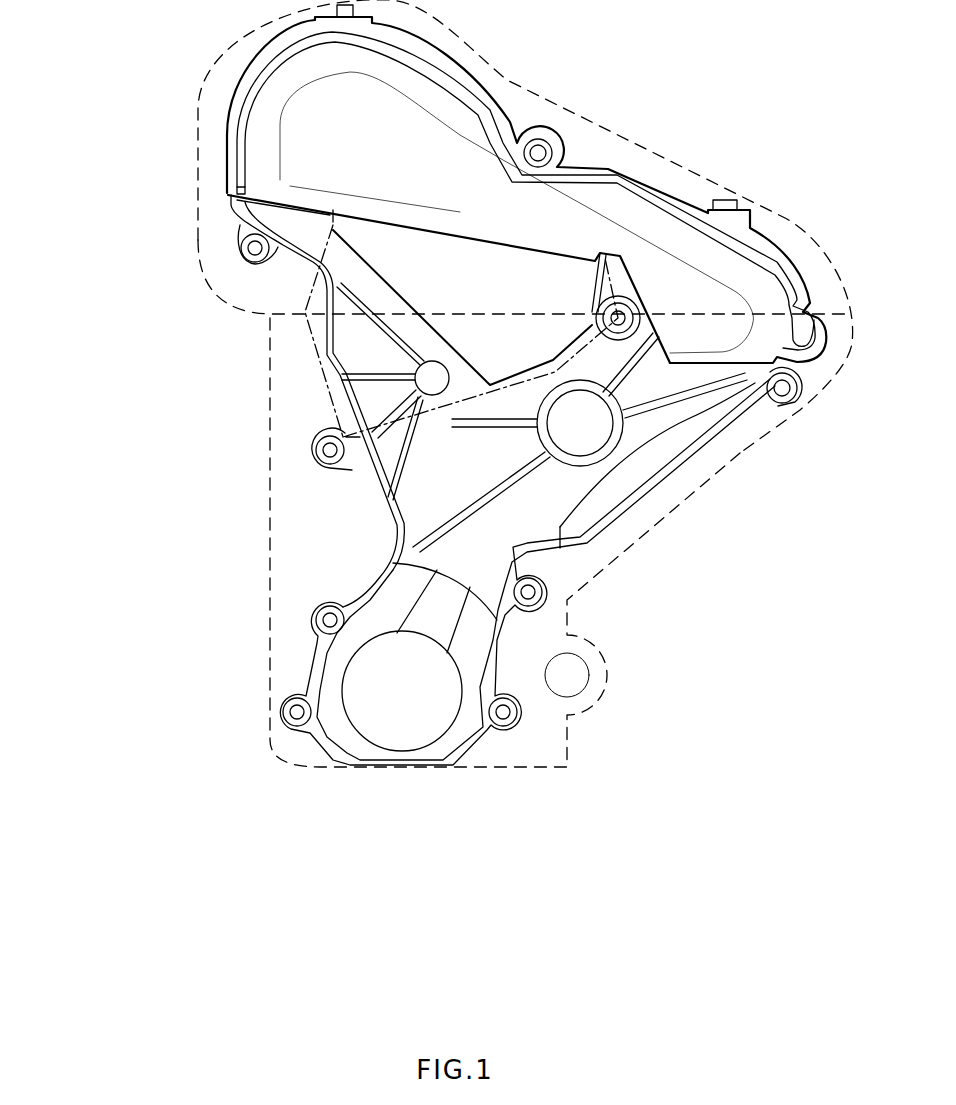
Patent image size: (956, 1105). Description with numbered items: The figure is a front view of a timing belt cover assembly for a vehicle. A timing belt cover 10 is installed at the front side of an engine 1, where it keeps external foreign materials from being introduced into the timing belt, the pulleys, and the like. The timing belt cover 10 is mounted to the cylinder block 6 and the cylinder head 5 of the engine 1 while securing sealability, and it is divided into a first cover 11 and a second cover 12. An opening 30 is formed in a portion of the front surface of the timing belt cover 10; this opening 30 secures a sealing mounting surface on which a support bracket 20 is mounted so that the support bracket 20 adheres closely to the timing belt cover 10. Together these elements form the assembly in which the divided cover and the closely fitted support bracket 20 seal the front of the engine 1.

The engine 1 is at (548, 103).
The cylinder head 5 is at (722, 185).
The cylinder block 6 is at (740, 453).
The timing belt cover 10 is at (95, 205).
The first cover 11 is at (423, 487).
The second cover 12 is at (260, 165).
The support bracket 20 is at (318, 353).
The opening 30 is at (533, 292).